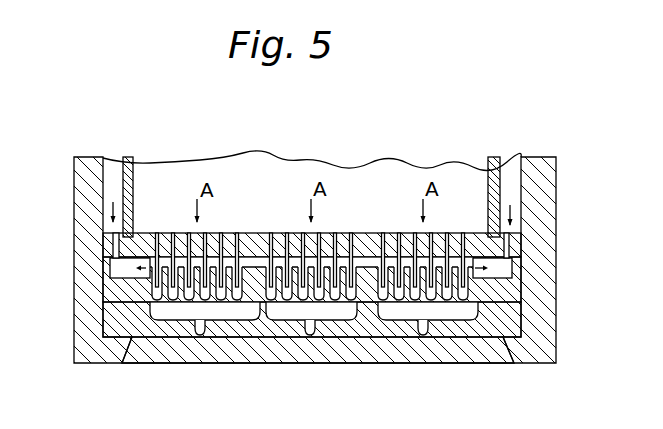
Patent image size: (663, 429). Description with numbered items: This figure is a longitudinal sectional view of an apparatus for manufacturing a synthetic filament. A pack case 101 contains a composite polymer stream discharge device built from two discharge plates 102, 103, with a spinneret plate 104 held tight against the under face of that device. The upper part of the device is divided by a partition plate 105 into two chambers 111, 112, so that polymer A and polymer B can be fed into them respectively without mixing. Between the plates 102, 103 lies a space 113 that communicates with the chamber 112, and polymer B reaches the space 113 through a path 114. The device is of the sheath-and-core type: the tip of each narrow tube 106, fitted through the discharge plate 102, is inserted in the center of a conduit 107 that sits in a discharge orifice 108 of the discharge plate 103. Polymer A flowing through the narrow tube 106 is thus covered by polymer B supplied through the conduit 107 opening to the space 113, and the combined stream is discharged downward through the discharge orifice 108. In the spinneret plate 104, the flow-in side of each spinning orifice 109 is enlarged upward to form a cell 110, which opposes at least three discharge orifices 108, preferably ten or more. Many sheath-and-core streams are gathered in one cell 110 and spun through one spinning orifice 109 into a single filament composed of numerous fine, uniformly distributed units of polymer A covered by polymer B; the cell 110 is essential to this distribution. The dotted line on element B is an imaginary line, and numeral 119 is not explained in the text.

The pack case 101 is at (550, 264).
The discharge plate 102 is at (518, 246).
The discharge plate 103 is at (518, 294).
The spinneret plate 104 is at (513, 320).
The partition plate 105 is at (492, 191).
The narrow tube 106 is at (172, 232).
The conduit 107 is at (146, 268).
The discharge orifice 108 is at (150, 283).
The spinning orifice 109 is at (316, 320).
The cell 110 is at (172, 312).
The chamber 111 is at (242, 165).
The chamber 112 is at (120, 158).
The space 113 is at (115, 267).
The path 114 is at (115, 247).
The supply port 119 is at (205, 333).